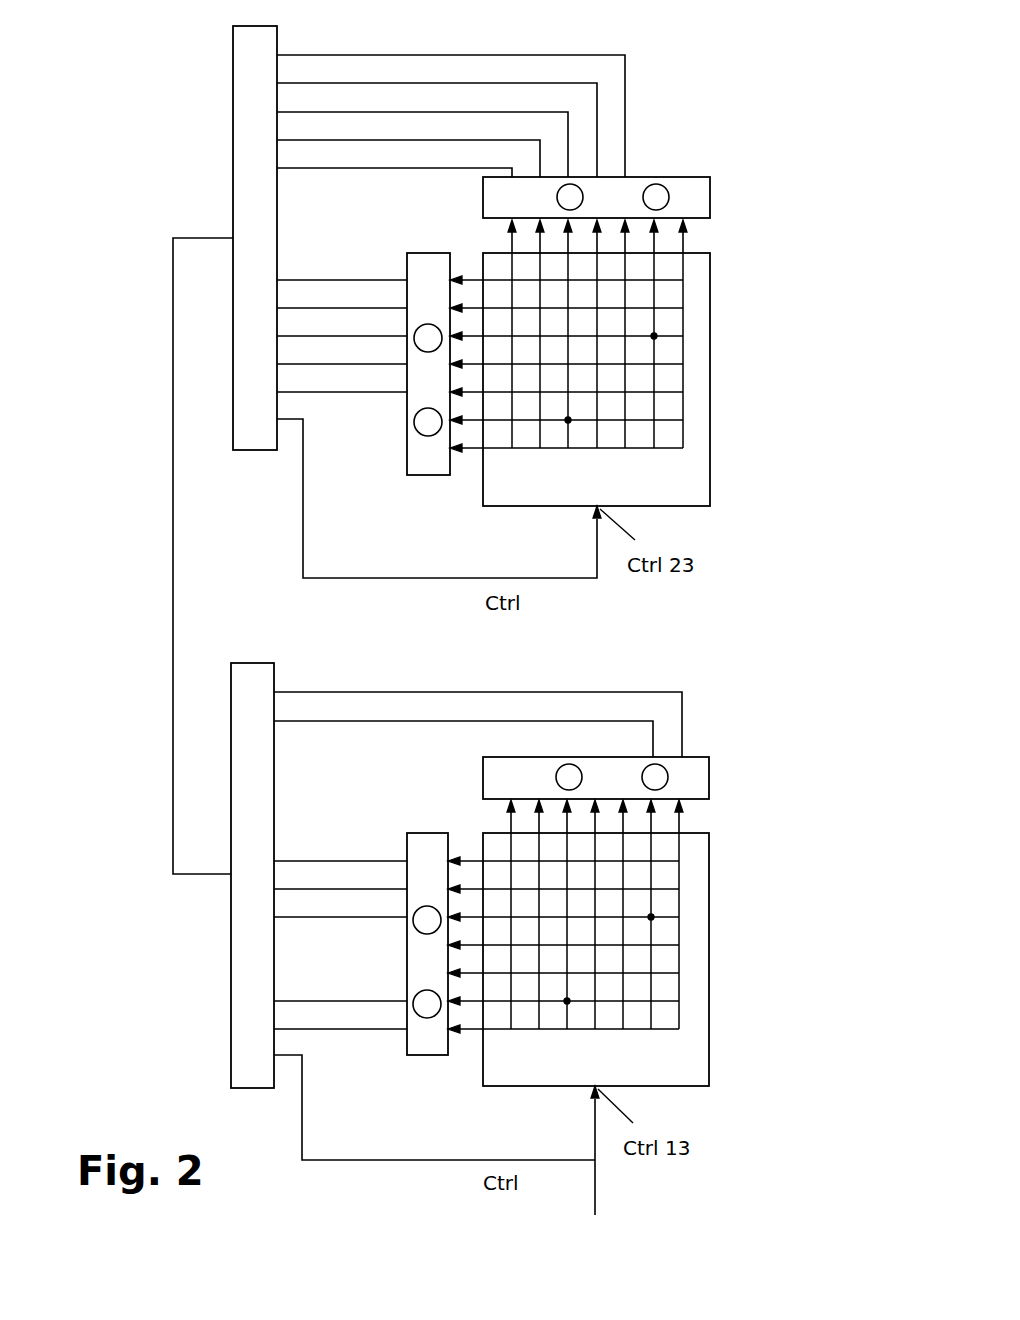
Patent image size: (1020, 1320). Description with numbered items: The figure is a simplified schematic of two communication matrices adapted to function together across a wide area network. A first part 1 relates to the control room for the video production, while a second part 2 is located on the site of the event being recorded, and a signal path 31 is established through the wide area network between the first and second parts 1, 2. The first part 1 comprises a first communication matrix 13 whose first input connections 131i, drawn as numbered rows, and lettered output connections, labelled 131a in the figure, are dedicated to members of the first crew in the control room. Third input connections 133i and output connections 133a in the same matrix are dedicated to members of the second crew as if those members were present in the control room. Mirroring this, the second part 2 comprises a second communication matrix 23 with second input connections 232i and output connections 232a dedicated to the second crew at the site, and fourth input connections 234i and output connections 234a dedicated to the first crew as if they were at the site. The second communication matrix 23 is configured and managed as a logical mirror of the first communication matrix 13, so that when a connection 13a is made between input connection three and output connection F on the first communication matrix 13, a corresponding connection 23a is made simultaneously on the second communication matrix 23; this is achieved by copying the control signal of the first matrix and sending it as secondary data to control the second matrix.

The first part 1 is at (250, 1057).
The second part 2 is at (250, 432).
The signal path 31 is at (173, 600).
The first communication matrix 13 is at (700, 1050).
The connection 13a is at (653, 916).
The second communication matrix 23 is at (700, 470).
The corresponding connection 23a is at (656, 335).
The first column register connections 131a is at (483, 767).
The first input connections 131i is at (417, 840).
The first column register 133a is at (711, 778).
The third input connections 133i is at (420, 1048).
The second column register connections 234a is at (482, 183).
The fourth input connections 234i is at (417, 257).
The second column register 232a is at (712, 197).
The second input connections 232i is at (420, 468).